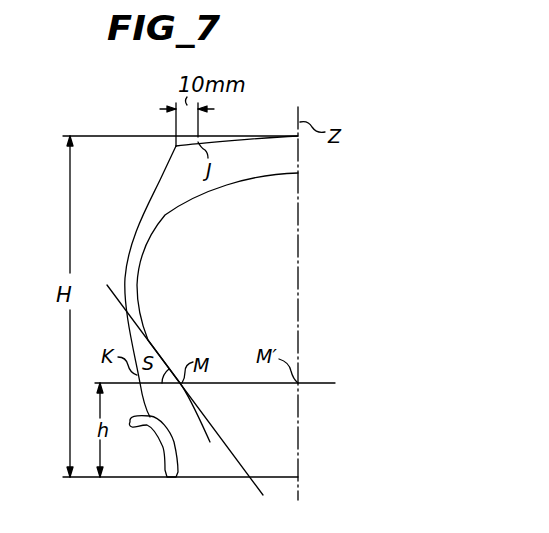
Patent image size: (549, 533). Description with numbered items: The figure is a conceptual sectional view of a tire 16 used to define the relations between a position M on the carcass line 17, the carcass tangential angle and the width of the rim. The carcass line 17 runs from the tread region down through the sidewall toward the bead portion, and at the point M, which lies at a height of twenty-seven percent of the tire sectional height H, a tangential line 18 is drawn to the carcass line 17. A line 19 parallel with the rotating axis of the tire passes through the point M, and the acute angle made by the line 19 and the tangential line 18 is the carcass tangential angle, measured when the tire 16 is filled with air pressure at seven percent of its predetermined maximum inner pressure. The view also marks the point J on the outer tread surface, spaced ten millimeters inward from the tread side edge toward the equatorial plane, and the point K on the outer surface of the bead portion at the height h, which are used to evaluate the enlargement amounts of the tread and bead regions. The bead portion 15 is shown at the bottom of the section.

The bead portion 15 is at (237, 498).
The tire 16 is at (307, 112).
The carcass line 17 is at (163, 213).
The tangential line 18 is at (107, 285).
The line parallel with rotating axis 19 is at (325, 383).